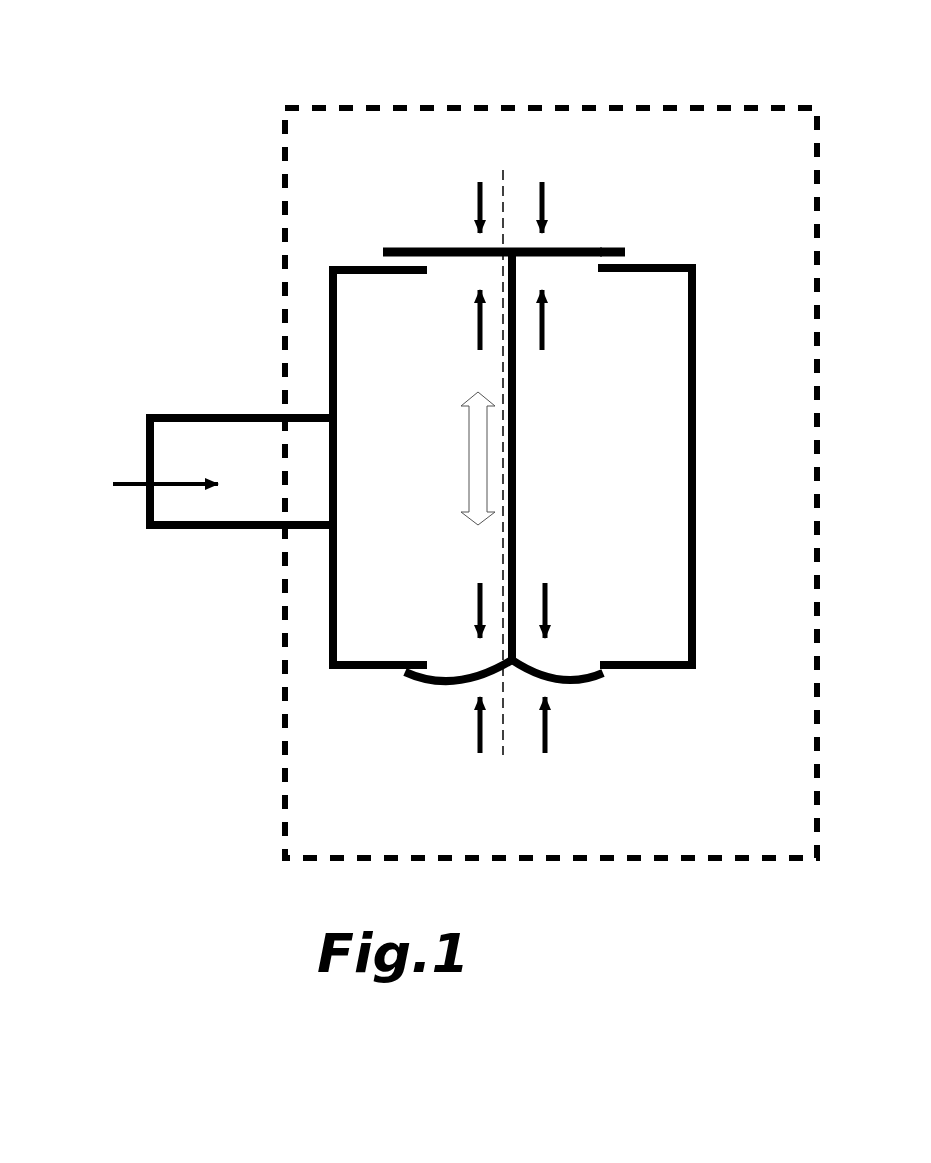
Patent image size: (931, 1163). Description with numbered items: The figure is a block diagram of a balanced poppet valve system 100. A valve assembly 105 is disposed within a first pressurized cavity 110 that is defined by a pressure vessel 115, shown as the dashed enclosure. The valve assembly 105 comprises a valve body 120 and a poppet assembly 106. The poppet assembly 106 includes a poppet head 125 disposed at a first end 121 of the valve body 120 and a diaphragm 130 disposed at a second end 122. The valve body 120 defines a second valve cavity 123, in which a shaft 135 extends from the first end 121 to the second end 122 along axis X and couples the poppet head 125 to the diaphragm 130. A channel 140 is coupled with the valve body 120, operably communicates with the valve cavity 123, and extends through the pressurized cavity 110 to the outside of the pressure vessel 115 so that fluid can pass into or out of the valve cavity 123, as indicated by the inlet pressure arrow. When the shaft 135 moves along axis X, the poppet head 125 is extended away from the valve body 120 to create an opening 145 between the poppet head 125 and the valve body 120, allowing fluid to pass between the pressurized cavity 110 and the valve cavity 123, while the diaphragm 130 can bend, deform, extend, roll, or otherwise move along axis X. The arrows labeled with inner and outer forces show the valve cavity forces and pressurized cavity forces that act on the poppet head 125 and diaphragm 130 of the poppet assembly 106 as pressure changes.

The balanced poppet valve system 100 is at (218, 84).
The valve assembly 105 is at (686, 210).
The poppet assembly 106 is at (563, 337).
The first pressurized cavity 110 is at (303, 744).
The pressure vessel 115 is at (282, 797).
The valve body 120 is at (695, 468).
The first end 121 is at (345, 265).
The second end 122 is at (675, 672).
The valve cavity 123 is at (653, 617).
The poppet head 125 is at (572, 246).
The diaphragm 130 is at (418, 675).
The shaft 135 is at (516, 432).
The channel 140 is at (170, 415).
The opening 145 is at (636, 252).